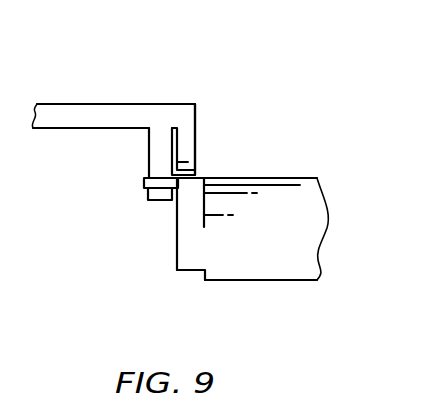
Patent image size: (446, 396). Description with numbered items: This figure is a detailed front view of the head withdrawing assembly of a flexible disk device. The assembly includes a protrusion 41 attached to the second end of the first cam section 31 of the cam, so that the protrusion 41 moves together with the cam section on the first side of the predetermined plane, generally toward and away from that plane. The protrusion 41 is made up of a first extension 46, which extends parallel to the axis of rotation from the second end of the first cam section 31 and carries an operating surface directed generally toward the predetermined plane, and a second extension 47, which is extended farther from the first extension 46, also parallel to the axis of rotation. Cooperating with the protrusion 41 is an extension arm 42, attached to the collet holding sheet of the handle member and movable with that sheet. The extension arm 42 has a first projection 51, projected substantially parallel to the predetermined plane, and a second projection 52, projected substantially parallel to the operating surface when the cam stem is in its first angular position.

The first cam section 31 is at (287, 280).
The protrusion 41 is at (166, 227).
The extension arm 42 is at (103, 103).
The first extension 46 is at (176, 267).
The second extension 47 is at (143, 183).
The first projection 51 is at (148, 152).
The second projection 52 is at (195, 140).